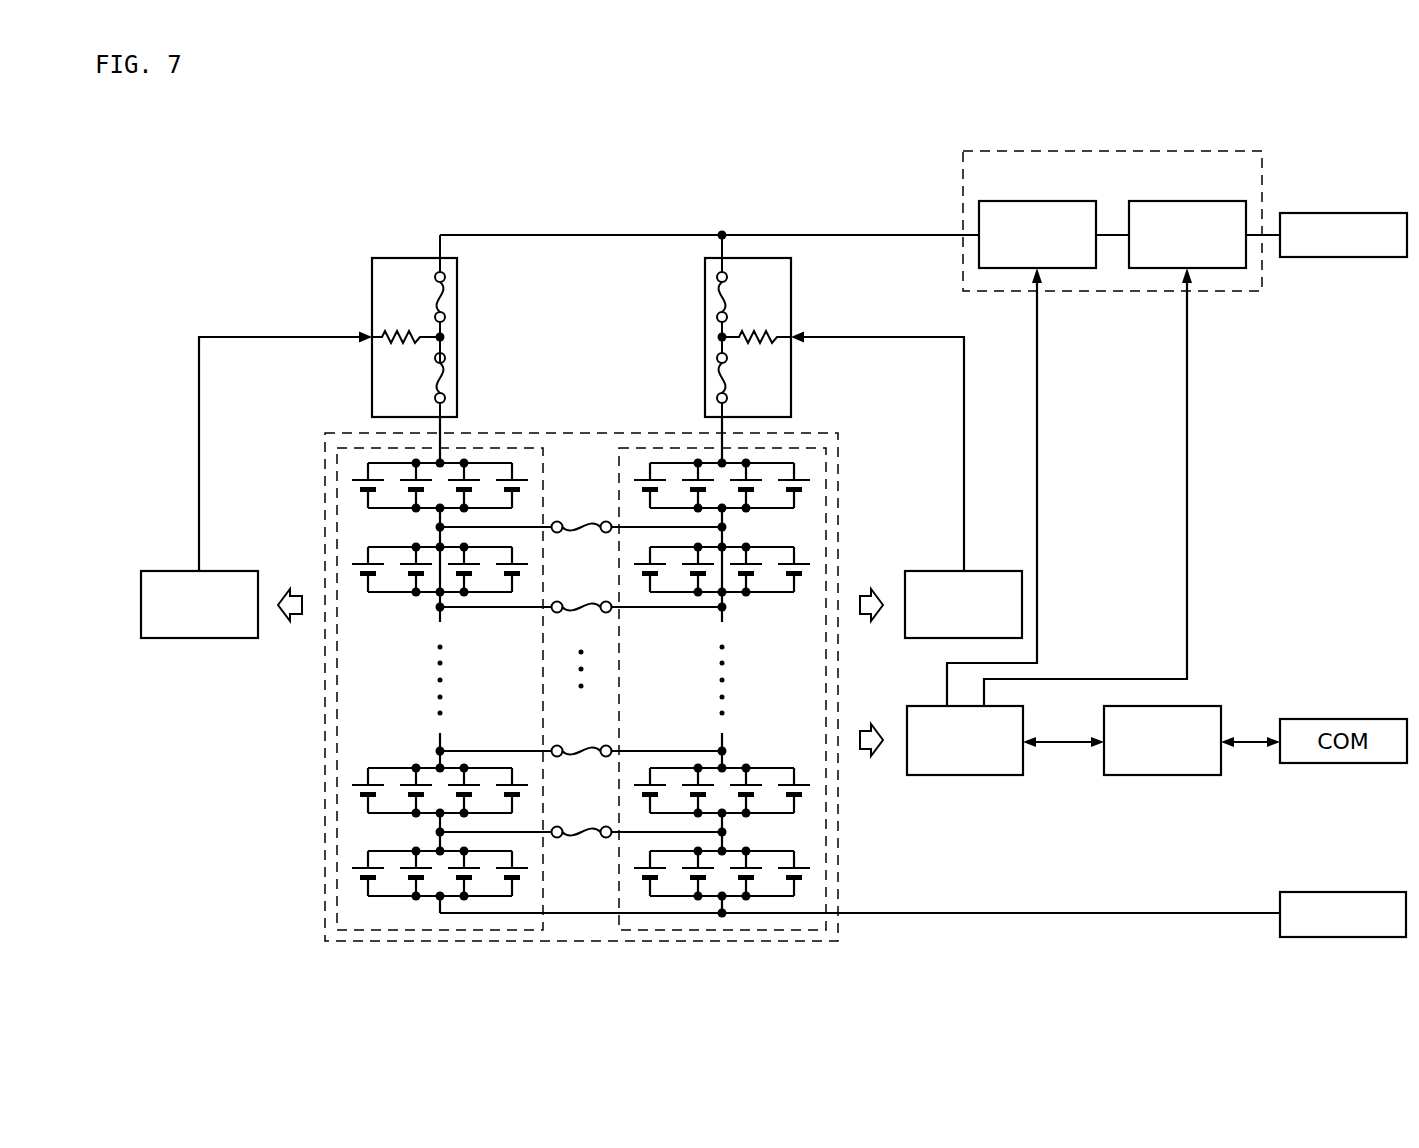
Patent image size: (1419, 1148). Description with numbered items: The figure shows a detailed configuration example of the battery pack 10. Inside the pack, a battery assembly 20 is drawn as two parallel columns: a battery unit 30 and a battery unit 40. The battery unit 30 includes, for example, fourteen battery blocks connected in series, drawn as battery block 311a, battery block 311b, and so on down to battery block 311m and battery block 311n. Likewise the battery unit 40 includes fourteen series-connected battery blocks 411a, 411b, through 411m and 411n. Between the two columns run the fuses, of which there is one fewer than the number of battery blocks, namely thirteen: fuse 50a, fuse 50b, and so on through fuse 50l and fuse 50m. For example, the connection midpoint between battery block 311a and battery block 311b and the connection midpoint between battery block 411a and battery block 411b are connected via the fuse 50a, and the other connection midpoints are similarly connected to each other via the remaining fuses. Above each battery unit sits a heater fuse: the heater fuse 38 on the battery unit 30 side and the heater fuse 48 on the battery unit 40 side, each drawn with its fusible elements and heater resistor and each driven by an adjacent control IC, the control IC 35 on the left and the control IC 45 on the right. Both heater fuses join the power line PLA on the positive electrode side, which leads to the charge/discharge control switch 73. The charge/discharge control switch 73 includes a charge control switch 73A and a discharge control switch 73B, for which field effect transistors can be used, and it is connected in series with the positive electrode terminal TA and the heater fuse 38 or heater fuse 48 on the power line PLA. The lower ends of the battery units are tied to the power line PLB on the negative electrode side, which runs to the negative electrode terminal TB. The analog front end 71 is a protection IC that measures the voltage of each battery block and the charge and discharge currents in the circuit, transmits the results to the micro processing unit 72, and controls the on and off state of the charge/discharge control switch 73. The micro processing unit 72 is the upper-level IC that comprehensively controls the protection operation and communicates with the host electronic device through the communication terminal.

The battery pack 10 is at (776, 124).
The battery cell assembly 20 is at (580, 432).
The battery unit 30 is at (514, 447).
The battery unit 40 is at (645, 447).
The first control IC 35 is at (163, 571).
The second control IC 45 is at (998, 571).
The heater fuse 38 is at (372, 283).
The heater fuse 48 is at (791, 283).
The fuse 50a is at (589, 522).
The fuse 50b is at (589, 602).
The connection switch 50l is at (589, 746).
The fuse 50m is at (589, 827).
The battery block 311a is at (364, 480).
The battery block 311b is at (364, 564).
The cell block 311m is at (364, 797).
The battery block 311n is at (364, 880).
The battery block 411a is at (798, 480).
The battery block 411b is at (798, 564).
The cell block 411m is at (798, 797).
The battery block 411n is at (798, 880).
The AFE 71 is at (965, 775).
The MPU 72 is at (1163, 775).
The charge/discharge control switch 73 is at (1112, 199).
The charge control switch 73A is at (1037, 201).
The discharge control switch 73B is at (1187, 201).
The power line on the positive electrode side PLA is at (894, 233).
The power line on the negative electrode side PLB is at (1036, 912).
The positive electrode terminal TA is at (1343, 213).
The negative electrode terminal TB is at (1343, 892).